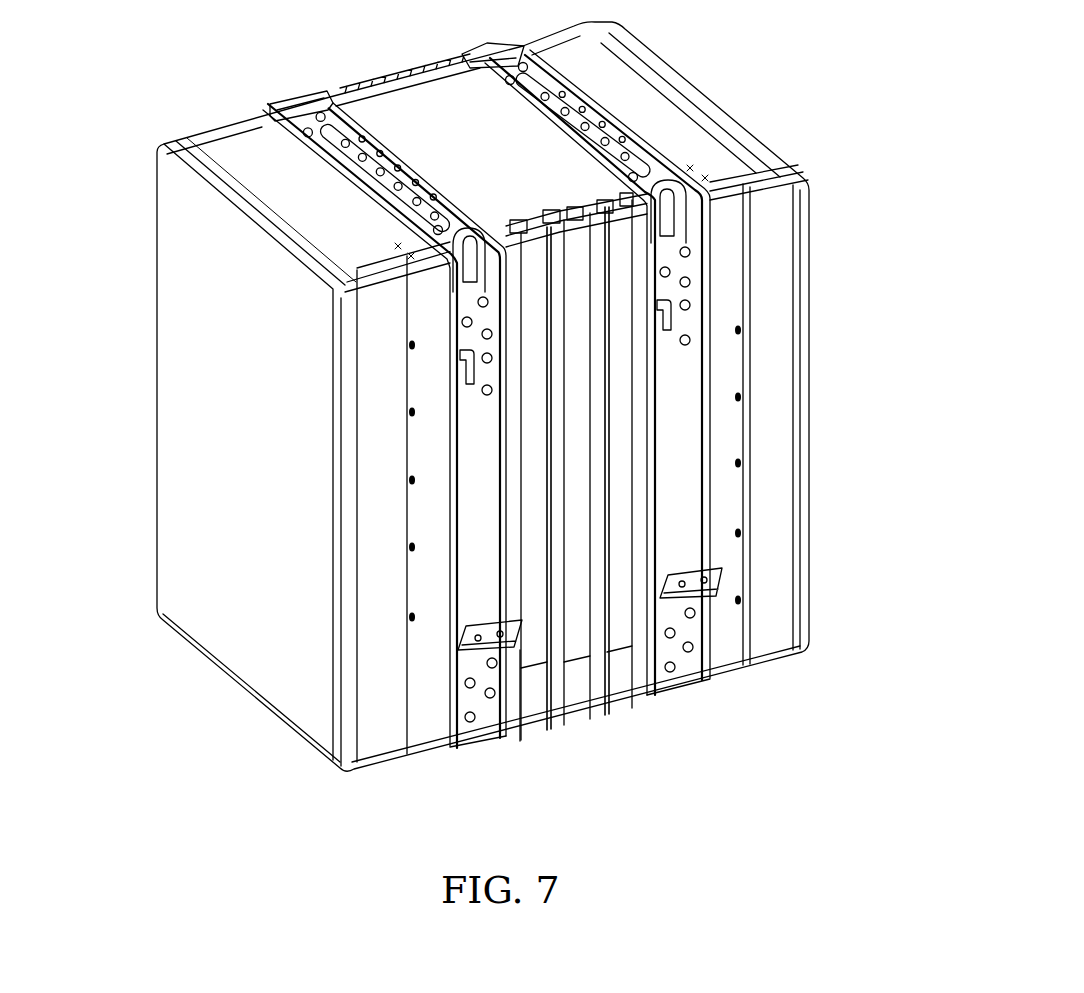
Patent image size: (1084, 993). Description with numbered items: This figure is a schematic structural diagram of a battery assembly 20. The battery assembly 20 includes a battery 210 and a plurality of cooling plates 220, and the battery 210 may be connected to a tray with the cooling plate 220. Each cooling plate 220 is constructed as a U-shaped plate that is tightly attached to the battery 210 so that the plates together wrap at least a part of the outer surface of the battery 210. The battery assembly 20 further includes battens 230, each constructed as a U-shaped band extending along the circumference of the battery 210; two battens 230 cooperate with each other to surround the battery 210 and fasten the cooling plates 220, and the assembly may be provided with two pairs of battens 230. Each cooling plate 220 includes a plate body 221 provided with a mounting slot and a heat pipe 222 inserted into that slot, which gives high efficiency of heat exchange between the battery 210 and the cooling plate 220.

The battery assembly 20 is at (82, 30).
The battery 210 is at (243, 573).
The cooling plate 220 is at (372, 78).
The plate body 221 is at (630, 497).
The heat pipe 222 is at (597, 538).
The batten 230 is at (647, 175).